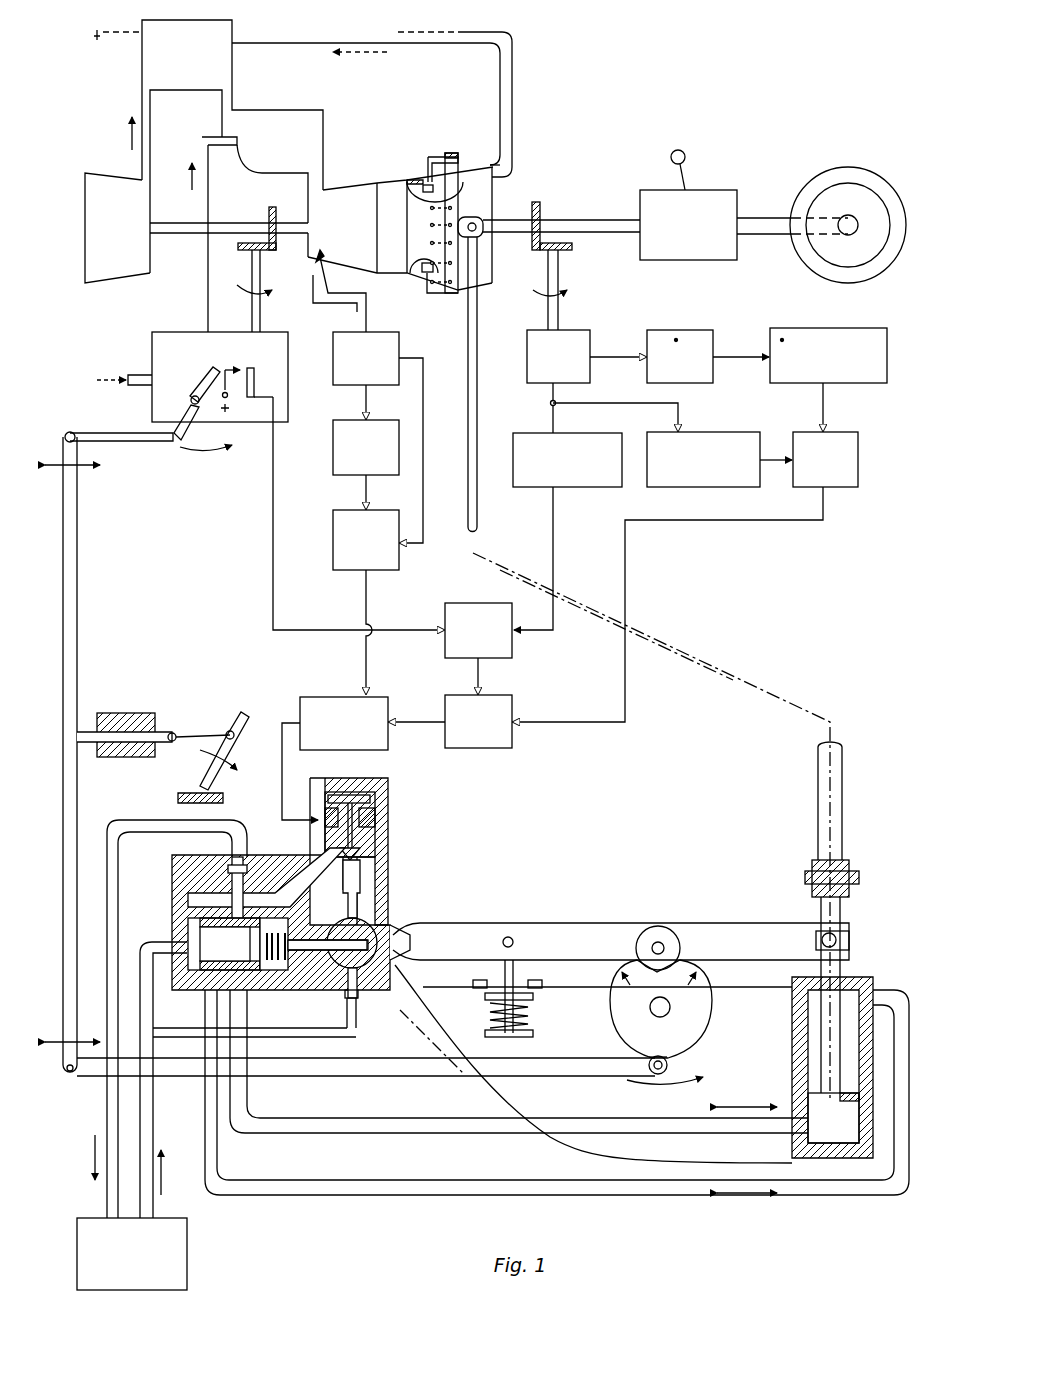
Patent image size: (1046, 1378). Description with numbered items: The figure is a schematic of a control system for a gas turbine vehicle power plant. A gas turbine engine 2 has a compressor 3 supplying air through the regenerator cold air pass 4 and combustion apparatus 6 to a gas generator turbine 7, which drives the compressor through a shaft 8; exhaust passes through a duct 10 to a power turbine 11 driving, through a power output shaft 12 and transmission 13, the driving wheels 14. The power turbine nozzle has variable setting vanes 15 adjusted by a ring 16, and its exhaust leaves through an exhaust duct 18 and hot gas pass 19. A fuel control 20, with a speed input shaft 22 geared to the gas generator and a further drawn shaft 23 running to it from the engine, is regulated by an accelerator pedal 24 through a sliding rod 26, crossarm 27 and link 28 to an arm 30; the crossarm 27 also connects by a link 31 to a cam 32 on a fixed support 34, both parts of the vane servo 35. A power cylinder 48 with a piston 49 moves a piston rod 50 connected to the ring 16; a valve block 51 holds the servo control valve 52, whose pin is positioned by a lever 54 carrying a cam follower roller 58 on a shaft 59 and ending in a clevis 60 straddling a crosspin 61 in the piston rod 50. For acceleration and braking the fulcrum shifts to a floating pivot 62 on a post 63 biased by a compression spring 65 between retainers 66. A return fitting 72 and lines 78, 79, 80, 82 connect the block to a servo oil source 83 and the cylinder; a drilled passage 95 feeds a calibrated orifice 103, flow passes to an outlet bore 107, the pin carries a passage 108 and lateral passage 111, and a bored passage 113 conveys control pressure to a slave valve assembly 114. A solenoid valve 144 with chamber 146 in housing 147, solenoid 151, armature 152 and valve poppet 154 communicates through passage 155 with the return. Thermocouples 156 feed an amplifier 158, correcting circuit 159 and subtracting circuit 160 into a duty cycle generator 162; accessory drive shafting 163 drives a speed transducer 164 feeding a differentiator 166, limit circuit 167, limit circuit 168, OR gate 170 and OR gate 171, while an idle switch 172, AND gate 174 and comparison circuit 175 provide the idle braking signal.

The gas turbine engine 2 is at (128, 92).
The compressor 3 is at (102, 183).
The cold air pass 4 is at (152, 68).
The combustion apparatus 6 is at (300, 122).
The gas generator turbine 7 is at (355, 190).
The shaft 8 is at (240, 226).
The duct 10 is at (388, 188).
The power turbine 11 is at (480, 170).
The power output shaft 12 is at (582, 222).
The transmission 13 is at (710, 200).
The driving wheels 14 is at (843, 177).
The variable setting vanes 15 is at (430, 200).
The ring 16 is at (447, 152).
The exhaust duct 18 is at (460, 36).
The hot gas pass 19 is at (220, 47).
The fuel control 20 is at (170, 333).
The shaft 22 is at (262, 300).
The drive shaft 23 is at (205, 291).
The accelerator pedal 24 is at (232, 720).
The sliding rod 26 is at (118, 735).
The crossarm 27 is at (80, 645).
The link 28 is at (145, 440).
The arm 30 is at (190, 413).
The link 31 is at (338, 1068).
The cam 32 is at (700, 1030).
The fixed support 34 is at (590, 1148).
The vane servo 35 is at (503, 920).
The power cylinder 48 is at (816, 1160).
The piston 49 is at (812, 1098).
The piston rod 50 is at (480, 508).
The valve block 51 is at (170, 915).
The servo control valve 52 is at (370, 926).
The lever 54 is at (565, 925).
The cam follower roller 58 is at (660, 930).
The shaft 59 is at (665, 948).
The clevis 60 is at (840, 907).
The crosspin 61 is at (845, 940).
The floating pivot 62 is at (502, 942).
The post 63 is at (510, 1015).
The compression spring 65 is at (522, 1020).
The retainers 66 is at (520, 1038).
The fitting 72 is at (225, 880).
The fluid line 78 is at (150, 1130).
The fluid line 79 is at (107, 1112).
The fluid line 80 is at (345, 1122).
The fluid line 82 is at (350, 1185).
The servo oil source 83 is at (178, 1255).
The drilled passage 95 is at (255, 1037).
The calibrated orifice 103 is at (356, 1015).
The outlet bore 107 is at (358, 880).
The passage 108 is at (345, 970).
The lateral passage 111 is at (330, 922).
The bored passage 113 is at (315, 940).
The slave valve assembly 114 is at (200, 995).
The solenoid valve 144 is at (390, 800).
The chamber 146 is at (390, 835).
The solenoid valve housing 147 is at (388, 793).
The solenoid 151 is at (372, 822).
The armature 152 is at (355, 800).
The valve poppet 154 is at (365, 853).
The passage 155 is at (285, 880).
The thermocouples 156 is at (322, 255).
The amplifier 158 is at (385, 347).
The correcting circuit 159 is at (335, 462).
The subtracting circuit 160 is at (345, 562).
The duty cycle generator 162 is at (325, 700).
The accessory drive shafting 163 is at (553, 310).
The power turbine speed transducer 164 is at (535, 368).
The differentiator 166 is at (693, 335).
The limit circuit 167 is at (858, 335).
The limit circuit 168 is at (720, 437).
The OR gate 170 is at (838, 442).
The OR gate 171 is at (500, 740).
The switch 172 is at (254, 386).
The AND gate 174 is at (468, 610).
The comparison circuit 175 is at (573, 440).